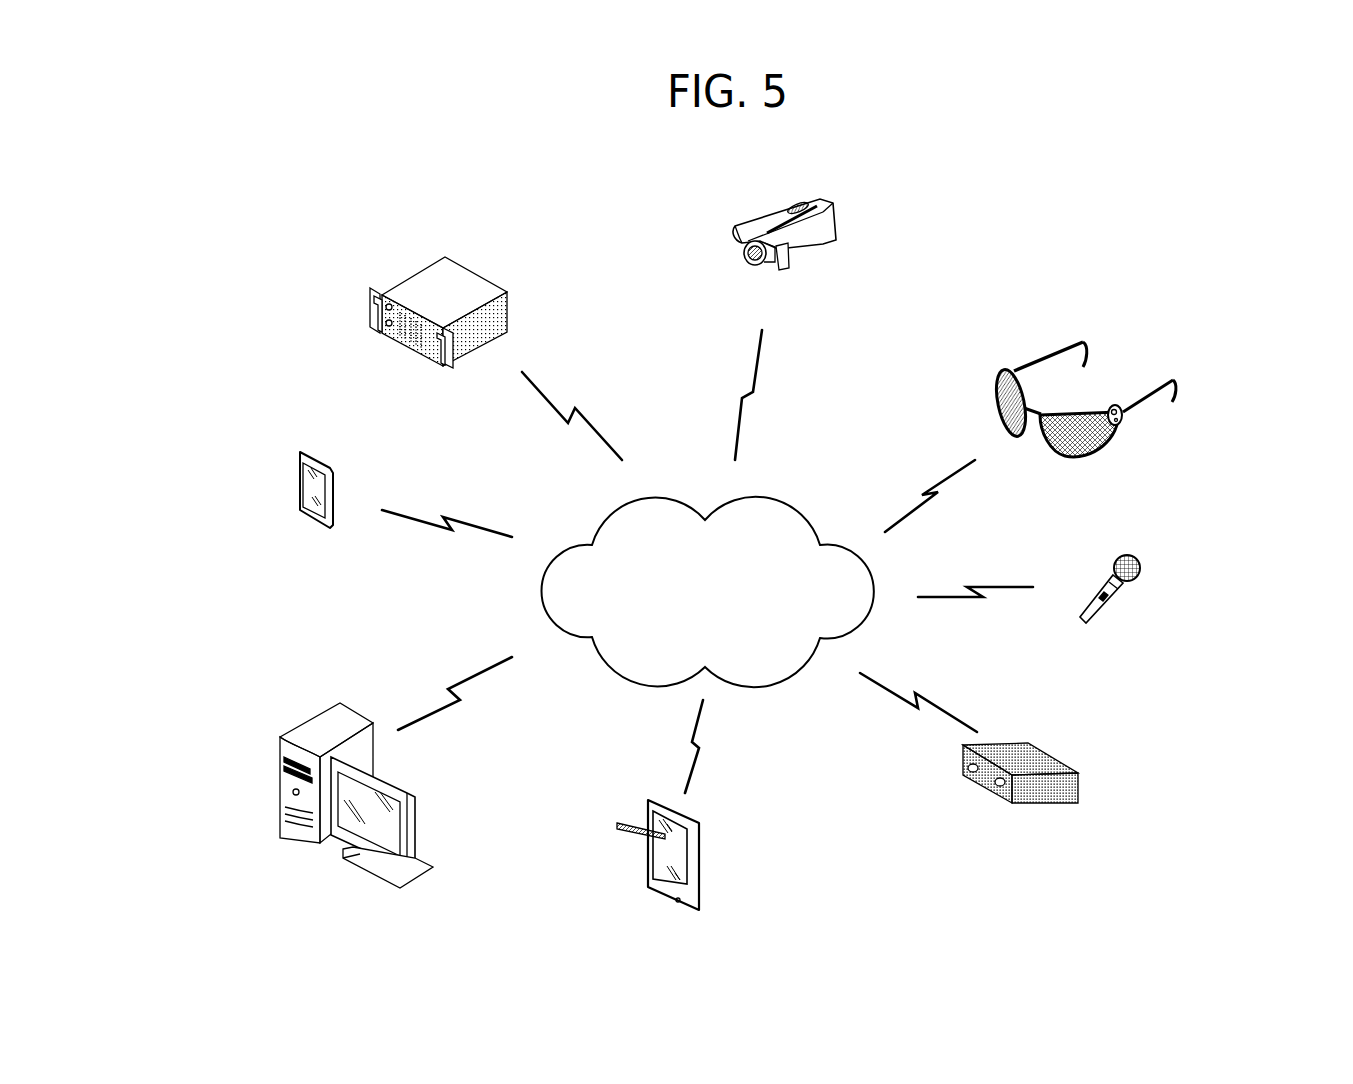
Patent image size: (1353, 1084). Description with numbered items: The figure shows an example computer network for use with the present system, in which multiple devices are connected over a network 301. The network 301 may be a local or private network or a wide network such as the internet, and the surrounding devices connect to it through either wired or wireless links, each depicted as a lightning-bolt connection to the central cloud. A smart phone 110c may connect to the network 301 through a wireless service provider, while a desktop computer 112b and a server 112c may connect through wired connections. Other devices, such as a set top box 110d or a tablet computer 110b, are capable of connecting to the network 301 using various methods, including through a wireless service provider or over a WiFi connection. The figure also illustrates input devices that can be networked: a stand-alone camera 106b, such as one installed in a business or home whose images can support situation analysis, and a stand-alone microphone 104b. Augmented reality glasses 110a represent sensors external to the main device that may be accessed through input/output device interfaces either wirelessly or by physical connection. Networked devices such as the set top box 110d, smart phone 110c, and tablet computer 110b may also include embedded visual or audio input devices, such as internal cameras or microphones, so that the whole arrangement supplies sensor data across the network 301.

The network 301 is at (782, 503).
The server 112c is at (415, 274).
The camera 106b is at (793, 201).
The augmented reality (AR) glasses 110a is at (1083, 342).
The microphone 104b is at (1127, 555).
The set top box 110d is at (1080, 777).
The tablet computer 110b is at (697, 852).
The desktop computer 112b is at (264, 748).
The smart phone 110c is at (300, 480).